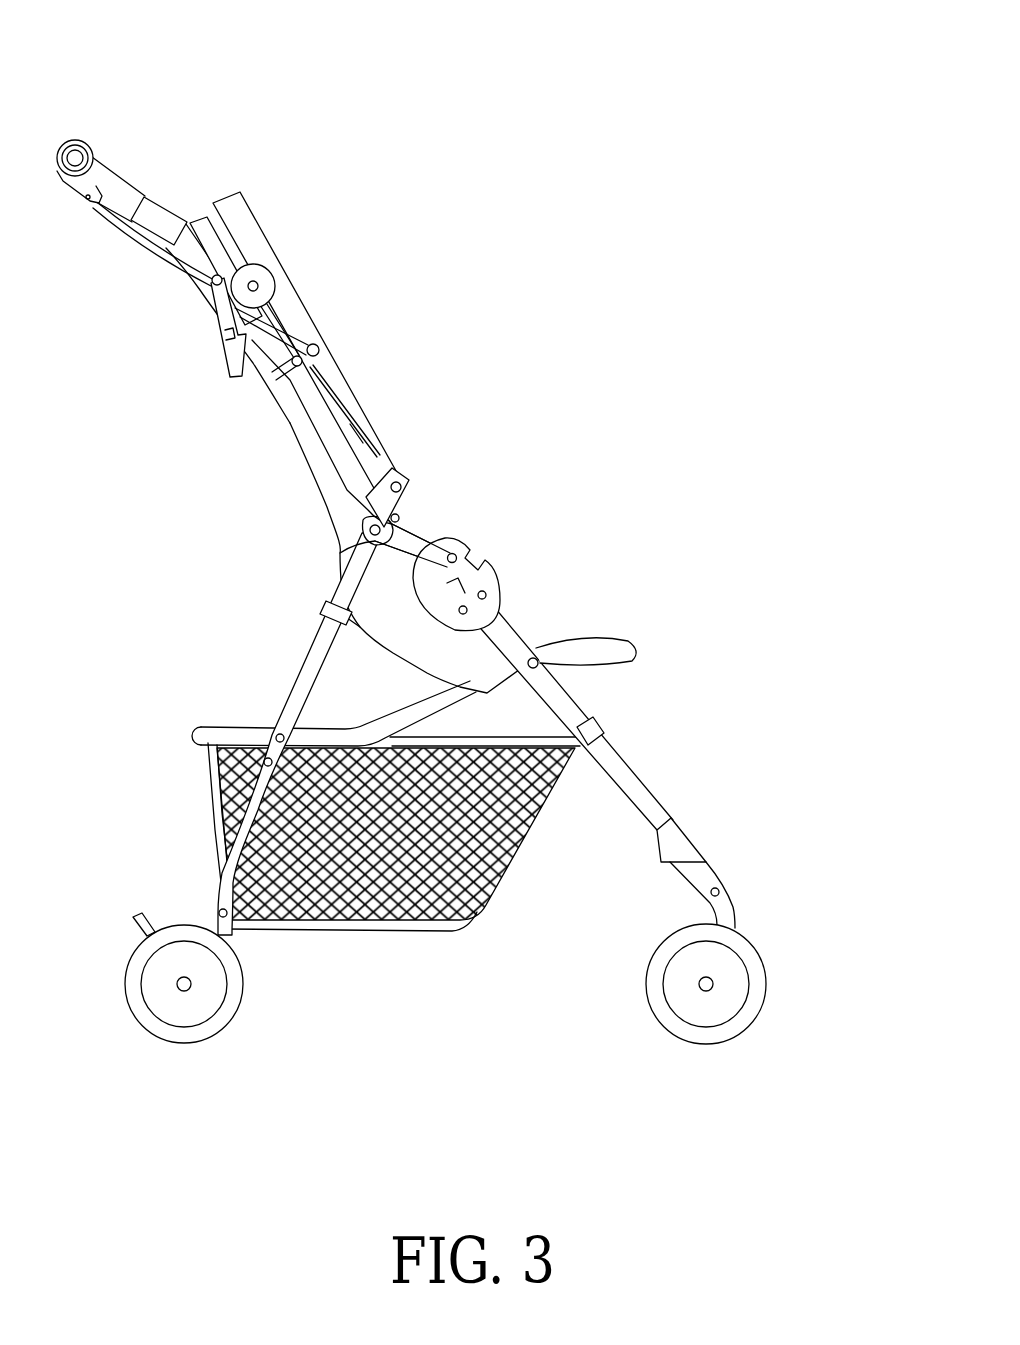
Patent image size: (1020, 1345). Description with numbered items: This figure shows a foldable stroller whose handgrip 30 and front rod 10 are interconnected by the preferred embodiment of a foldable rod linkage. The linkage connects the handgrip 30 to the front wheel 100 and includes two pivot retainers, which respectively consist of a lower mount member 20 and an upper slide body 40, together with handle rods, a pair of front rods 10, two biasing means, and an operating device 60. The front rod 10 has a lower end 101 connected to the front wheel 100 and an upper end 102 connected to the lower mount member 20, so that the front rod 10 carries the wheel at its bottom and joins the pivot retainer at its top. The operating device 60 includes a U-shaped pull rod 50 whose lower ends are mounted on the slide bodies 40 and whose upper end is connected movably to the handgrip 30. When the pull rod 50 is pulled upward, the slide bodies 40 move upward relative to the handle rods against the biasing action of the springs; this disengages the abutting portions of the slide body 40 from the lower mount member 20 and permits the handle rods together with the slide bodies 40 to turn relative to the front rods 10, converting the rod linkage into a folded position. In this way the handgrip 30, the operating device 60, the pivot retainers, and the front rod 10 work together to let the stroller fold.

The front rod 10 is at (600, 707).
The lower mount member 20 is at (506, 565).
The handgrip 30 is at (172, 184).
The upper slide body 40 is at (462, 520).
The U-shaped pull rod 50 is at (124, 258).
The operating device 60 is at (100, 117).
The front wheel 100 is at (745, 1005).
The lower end of the front rod 101 is at (717, 892).
The upper end of the front rod 102 is at (512, 625).